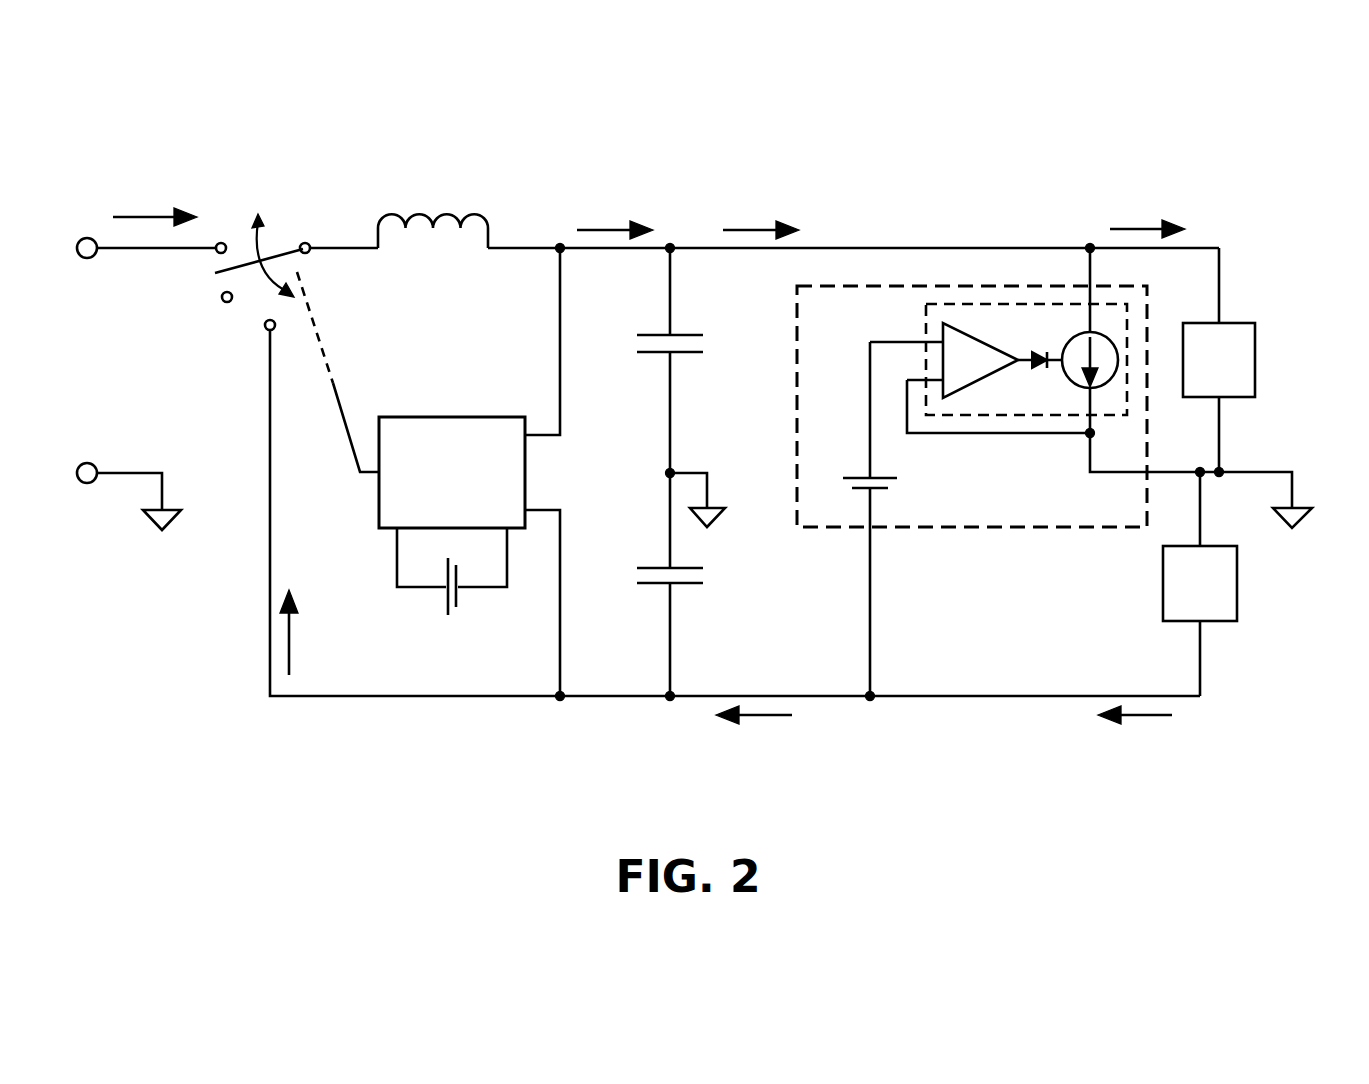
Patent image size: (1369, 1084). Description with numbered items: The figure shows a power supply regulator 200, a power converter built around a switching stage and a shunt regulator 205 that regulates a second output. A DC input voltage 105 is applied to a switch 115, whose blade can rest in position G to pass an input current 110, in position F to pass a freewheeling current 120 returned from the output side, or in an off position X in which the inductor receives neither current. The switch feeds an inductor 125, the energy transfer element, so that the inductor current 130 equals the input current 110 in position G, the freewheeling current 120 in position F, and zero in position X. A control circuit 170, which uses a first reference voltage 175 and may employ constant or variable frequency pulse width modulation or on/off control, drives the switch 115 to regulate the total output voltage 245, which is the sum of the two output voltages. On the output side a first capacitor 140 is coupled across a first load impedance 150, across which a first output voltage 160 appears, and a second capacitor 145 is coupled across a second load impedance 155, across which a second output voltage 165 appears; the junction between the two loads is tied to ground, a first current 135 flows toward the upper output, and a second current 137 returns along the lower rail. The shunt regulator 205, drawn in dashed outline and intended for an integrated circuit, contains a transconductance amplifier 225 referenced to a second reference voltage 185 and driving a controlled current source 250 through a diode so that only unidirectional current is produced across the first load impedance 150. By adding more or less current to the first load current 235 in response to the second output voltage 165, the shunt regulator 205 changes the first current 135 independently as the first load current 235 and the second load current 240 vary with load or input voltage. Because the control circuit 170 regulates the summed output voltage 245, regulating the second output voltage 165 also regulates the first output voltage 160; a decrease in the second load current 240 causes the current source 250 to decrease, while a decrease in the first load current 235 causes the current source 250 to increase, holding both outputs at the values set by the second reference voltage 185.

The power supply regulator 200 is at (701, 111).
The input voltage VG 105 is at (102, 342).
The input current IG 110 is at (125, 200).
The switch S1 115 is at (282, 205).
The freewheeling current IF 120 is at (302, 620).
The inductor L1 125 is at (435, 207).
The inductor current IL 130 is at (637, 210).
The current I1 135 is at (765, 210).
The current I2 137 is at (740, 735).
The capacitor C1 140 is at (653, 325).
The capacitor C2 145 is at (650, 600).
The load impedance Z1 150 is at (1210, 316).
The load impedance Z2 155 is at (1222, 630).
The output voltage V1 160 is at (1295, 340).
The output voltage V2 165 is at (1277, 562).
The control circuit 170 is at (435, 412).
The reference voltage VREF1 175 is at (428, 594).
The reference voltage VREF2 185 is at (862, 466).
The shunt regulator 205 is at (992, 540).
The transconductance amplifier 225 is at (1036, 395).
The load current IZ1 235 is at (1150, 210).
The output current IZ2 240 is at (1132, 733).
The output voltage VO 245 is at (590, 452).
The current source ISH1 250 is at (1062, 343).